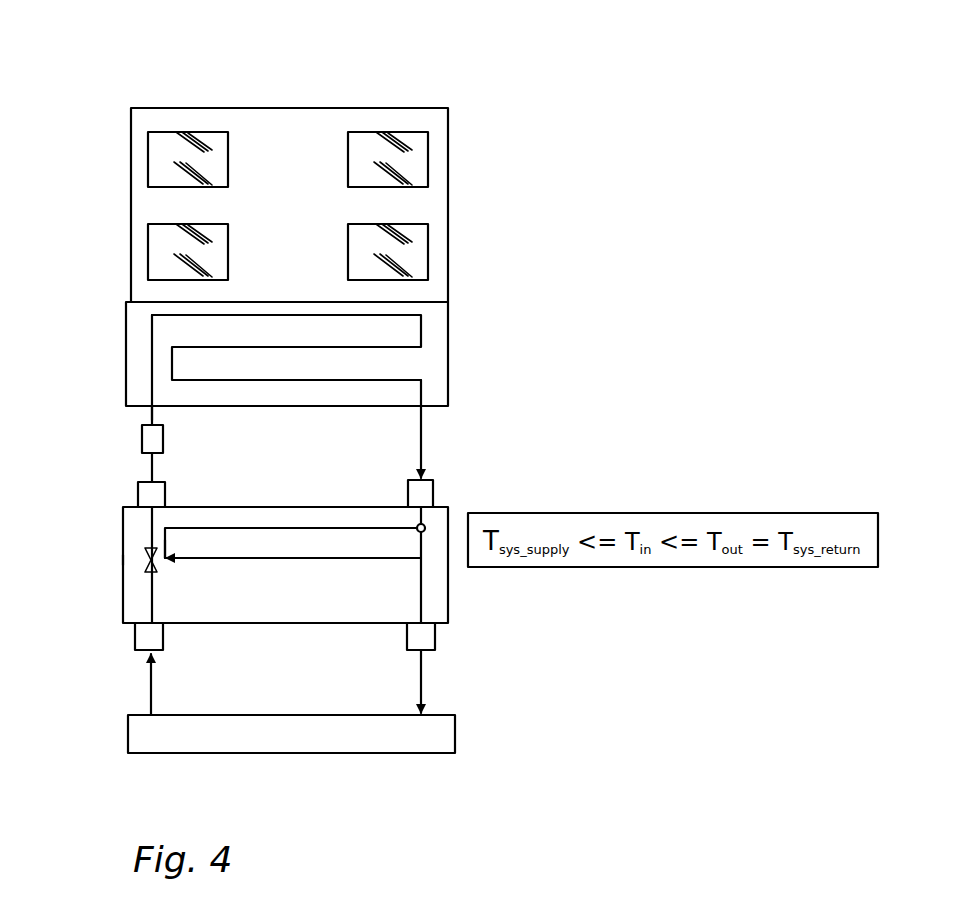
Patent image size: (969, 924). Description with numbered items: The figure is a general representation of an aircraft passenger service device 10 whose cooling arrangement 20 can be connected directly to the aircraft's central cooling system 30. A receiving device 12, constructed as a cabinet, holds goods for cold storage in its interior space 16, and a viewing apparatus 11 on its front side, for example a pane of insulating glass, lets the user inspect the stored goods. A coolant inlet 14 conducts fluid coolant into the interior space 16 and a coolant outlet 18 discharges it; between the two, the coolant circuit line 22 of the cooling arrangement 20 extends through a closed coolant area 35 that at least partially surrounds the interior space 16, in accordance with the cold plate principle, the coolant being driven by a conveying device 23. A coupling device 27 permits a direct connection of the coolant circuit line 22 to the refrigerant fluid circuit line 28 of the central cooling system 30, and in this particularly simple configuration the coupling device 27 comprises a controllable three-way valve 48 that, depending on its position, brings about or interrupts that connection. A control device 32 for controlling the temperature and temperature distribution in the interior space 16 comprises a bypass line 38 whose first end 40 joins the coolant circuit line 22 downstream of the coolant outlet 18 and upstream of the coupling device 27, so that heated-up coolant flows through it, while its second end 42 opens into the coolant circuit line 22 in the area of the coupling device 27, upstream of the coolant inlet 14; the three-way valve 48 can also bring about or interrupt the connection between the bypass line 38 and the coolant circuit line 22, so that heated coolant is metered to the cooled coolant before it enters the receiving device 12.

The aircraft passenger service device 10 is at (534, 134).
The viewing apparatus 11 is at (147, 257).
The receiving device 12 is at (383, 132).
The coolant inlet 14 is at (150, 408).
The interior space 16 is at (281, 213).
The coolant outlet 18 is at (421, 405).
The cooling arrangement 20 is at (445, 491).
The coolant circuit line 22 is at (155, 462).
The conveying device 23 is at (141, 440).
The coupling device 27 is at (123, 563).
The refrigerant fluid circuit line 28 is at (155, 660).
The central cooling system 30 is at (460, 740).
The control device 32 is at (193, 527).
The closed coolant area 35 is at (440, 347).
The bypass line 38 is at (298, 528).
The first end 40 is at (425, 527).
The second end 42 is at (168, 548).
The controllable three-way valve 48 is at (150, 560).